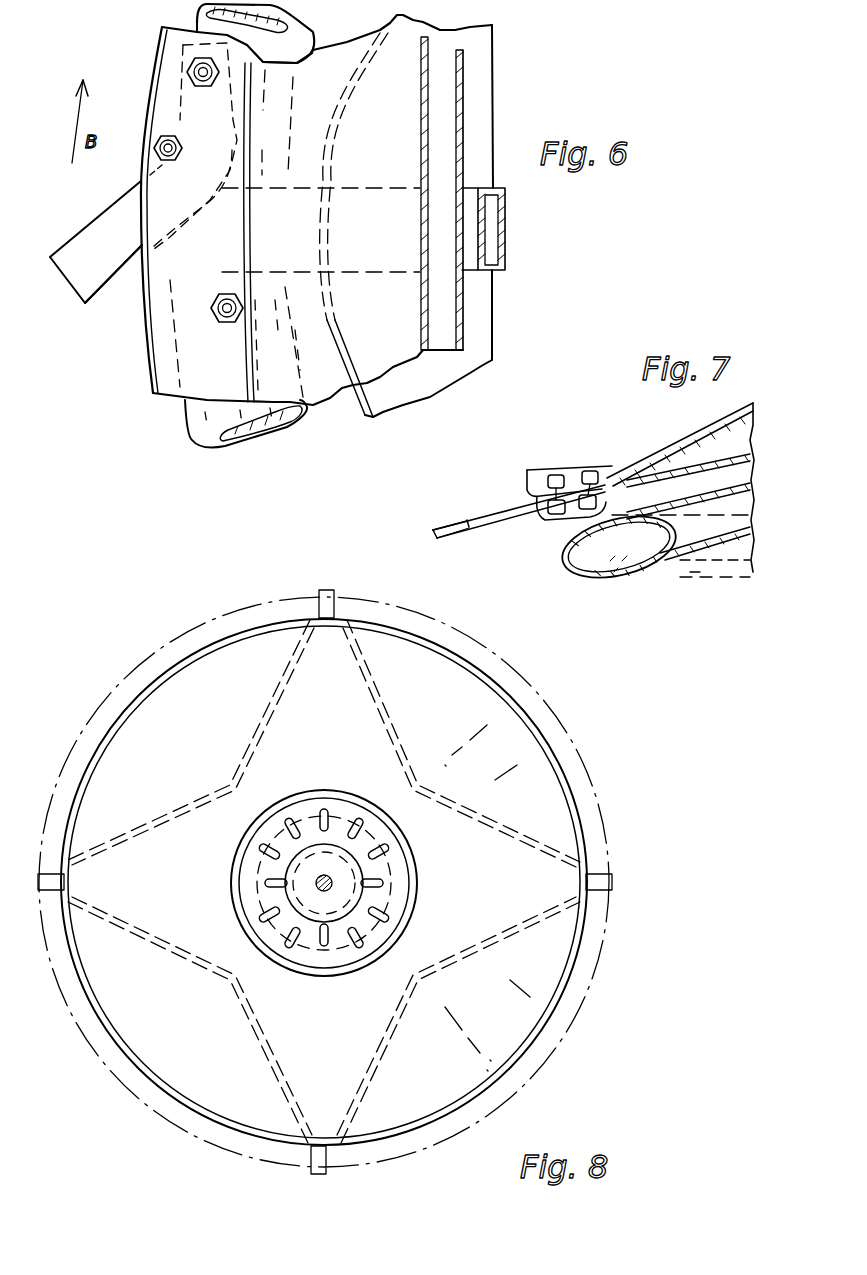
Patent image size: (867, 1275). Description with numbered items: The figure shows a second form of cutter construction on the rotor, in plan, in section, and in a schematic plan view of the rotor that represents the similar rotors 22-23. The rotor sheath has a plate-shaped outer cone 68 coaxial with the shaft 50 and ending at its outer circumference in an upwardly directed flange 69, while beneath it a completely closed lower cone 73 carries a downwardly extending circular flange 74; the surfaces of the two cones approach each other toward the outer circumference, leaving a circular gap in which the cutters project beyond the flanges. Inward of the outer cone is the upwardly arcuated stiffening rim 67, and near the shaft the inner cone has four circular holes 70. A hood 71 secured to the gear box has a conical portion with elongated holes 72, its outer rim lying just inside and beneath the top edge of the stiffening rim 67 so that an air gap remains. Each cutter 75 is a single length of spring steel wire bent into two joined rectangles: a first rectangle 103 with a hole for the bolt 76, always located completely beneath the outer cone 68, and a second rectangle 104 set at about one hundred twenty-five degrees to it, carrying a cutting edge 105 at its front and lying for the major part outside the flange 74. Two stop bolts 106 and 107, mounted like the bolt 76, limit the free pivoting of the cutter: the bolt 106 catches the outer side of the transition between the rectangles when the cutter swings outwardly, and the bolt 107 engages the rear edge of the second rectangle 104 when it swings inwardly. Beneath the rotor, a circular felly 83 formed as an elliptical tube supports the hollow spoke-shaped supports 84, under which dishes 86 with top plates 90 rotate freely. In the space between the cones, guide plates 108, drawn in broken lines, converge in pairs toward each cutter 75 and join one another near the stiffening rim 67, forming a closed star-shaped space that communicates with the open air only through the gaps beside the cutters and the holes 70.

In FIG. 6, the outer cone 68 is at (352, 48).
In FIG. 7, the outer cone 68 is at (684, 442).
In FIG. 8, the outer cone 68 is at (145, 722).
In FIG. 6, the flange 69 is at (150, 386).
In FIG. 7, the flange 69 is at (527, 470).
In FIG. 8, the flange 69 is at (180, 657).
In FIG. 6, the lower cone 73 is at (453, 87).
In FIG. 7, the lower cone 73 is at (693, 464).
In FIG. 7, the circular flange 74 is at (556, 540).
In FIG. 6, the cutter 75 is at (103, 293).
In FIG. 7, the cutter 75 is at (482, 504).
In FIG. 8, the cutter 75 is at (326, 590).
In FIG. 6, the bolt 76 is at (201, 86).
In FIG. 7, the bolt 76 is at (588, 470).
In FIG. 6, the felly 83 is at (275, 440).
In FIG. 7, the felly 83 is at (617, 575).
In FIG. 6, the support 84 is at (505, 236).
In FIG. 7, the support 84 is at (728, 562).
In FIG. 6, the dish 86 is at (437, 390).
In FIG. 6, the top plate 90 is at (486, 306).
In FIG. 6, the first rectangle 103 is at (226, 127).
In FIG. 6, the second rectangle 104 is at (123, 257).
In FIG. 7, the second rectangle 104 is at (500, 520).
In FIG. 6, the cutting edge 105 is at (104, 207).
In FIG. 7, the cutting edge 105 is at (434, 538).
In FIG. 6, the bolt 106 is at (183, 155).
In FIG. 7, the bolt 106 is at (558, 473).
In FIG. 6, the bolt 107 is at (226, 322).
In FIG. 8, the guide plate 108 is at (375, 688).
In FIG. 8, the stiffening rim 67 is at (402, 928).
In FIG. 8, the circular hole 70 is at (355, 835).
In FIG. 8, the hood 71 is at (347, 970).
In FIG. 8, the elongated hole 72 is at (268, 902).
In FIG. 8, the shaft 50 is at (340, 876).
In FIG. 8, the rotor 22-23 is at (110, 1080).